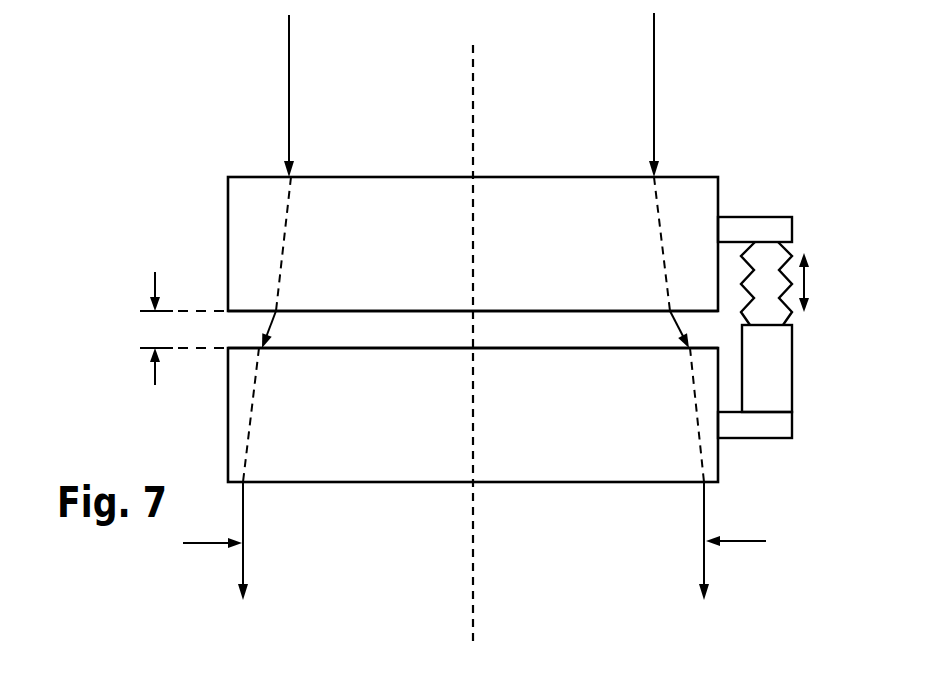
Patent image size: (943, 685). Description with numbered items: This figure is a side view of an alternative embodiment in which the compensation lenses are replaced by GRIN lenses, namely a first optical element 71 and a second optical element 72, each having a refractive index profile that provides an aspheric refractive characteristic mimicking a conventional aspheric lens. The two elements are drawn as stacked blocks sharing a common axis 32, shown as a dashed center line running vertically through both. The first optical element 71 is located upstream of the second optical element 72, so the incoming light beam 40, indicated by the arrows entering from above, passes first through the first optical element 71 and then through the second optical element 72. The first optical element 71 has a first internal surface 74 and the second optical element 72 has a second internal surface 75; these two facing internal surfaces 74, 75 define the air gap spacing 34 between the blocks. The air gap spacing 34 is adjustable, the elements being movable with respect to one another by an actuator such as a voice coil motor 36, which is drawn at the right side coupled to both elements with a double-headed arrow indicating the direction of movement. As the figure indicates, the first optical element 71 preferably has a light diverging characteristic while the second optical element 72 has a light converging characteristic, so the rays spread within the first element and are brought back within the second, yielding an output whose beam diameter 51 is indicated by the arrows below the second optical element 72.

The common axis 32 is at (474, 118).
The air gap spacing 34 is at (152, 283).
The voice coil motor 36 is at (782, 379).
The light beam 40 is at (680, 87).
The beam diameter 51 is at (735, 542).
The first optical element 71 is at (602, 278).
The second optical element 72 is at (607, 450).
The first internal surface 74 is at (313, 310).
The second internal surface 75 is at (313, 349).